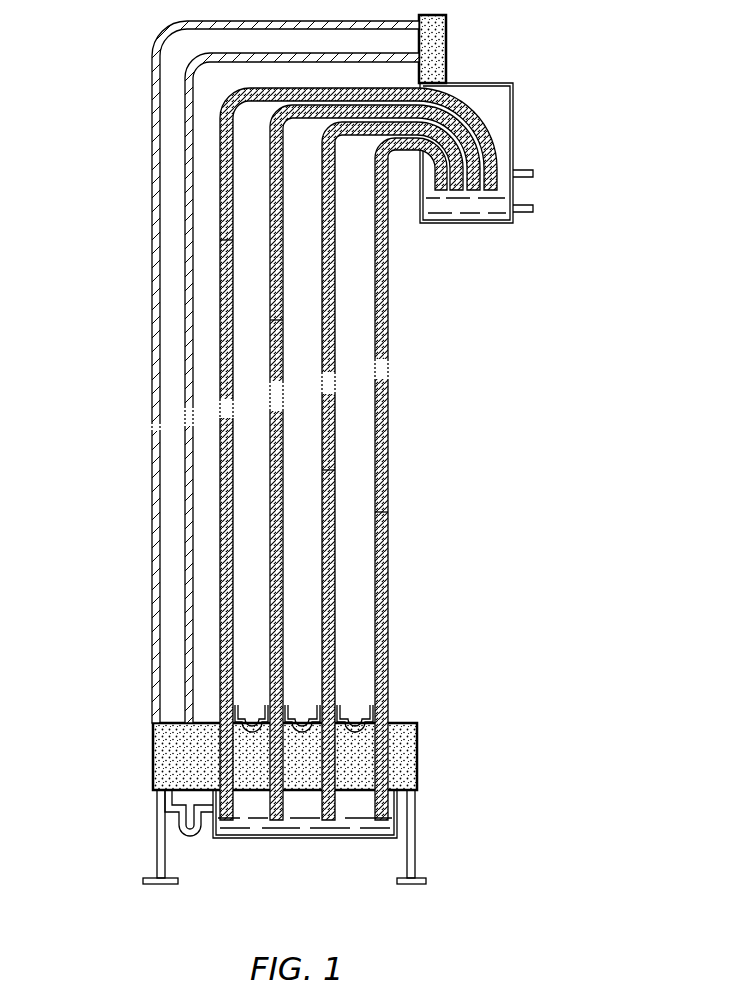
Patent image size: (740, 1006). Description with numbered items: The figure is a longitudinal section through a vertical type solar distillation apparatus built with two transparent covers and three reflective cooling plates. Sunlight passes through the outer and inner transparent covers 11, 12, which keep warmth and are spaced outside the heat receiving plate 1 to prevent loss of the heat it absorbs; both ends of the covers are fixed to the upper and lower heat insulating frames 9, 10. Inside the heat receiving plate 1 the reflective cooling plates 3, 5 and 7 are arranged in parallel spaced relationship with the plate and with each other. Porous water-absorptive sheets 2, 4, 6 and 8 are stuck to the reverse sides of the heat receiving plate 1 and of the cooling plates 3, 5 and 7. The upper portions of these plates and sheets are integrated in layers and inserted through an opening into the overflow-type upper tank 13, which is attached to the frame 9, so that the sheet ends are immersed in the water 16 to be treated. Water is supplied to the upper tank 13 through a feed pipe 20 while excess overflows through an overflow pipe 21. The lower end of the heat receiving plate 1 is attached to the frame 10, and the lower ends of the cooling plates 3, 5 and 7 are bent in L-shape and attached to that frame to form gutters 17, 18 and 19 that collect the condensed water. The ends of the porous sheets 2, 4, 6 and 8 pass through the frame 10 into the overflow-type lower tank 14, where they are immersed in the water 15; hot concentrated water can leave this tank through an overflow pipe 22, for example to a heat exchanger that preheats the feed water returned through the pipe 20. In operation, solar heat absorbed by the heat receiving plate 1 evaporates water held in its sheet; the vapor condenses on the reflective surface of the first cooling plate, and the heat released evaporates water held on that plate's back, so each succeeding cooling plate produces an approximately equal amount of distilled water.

The heat receiving plate 1 is at (218, 192).
The porous water-absorptive sheet 2 is at (222, 235).
The reflective cooling plate 3 is at (270, 316).
The porous water-absorptive sheet 4 is at (272, 287).
The reflective cooling plate 5 is at (318, 472).
The porous water-absorptive sheet 6 is at (335, 322).
The reflective cooling plate 7 is at (368, 516).
The porous water-absorptive sheet 8 is at (388, 391).
The heat insulating frame 9 is at (446, 28).
The heat insulating frame 10 is at (173, 740).
The transparent cover 11 is at (188, 30).
The transparent cover 12 is at (446, 52).
The upper tank 13 is at (513, 100).
The lower tank 14 is at (400, 820).
The water to be treated 15 is at (357, 823).
The water to be treated 16 is at (513, 223).
The gutter 17 is at (247, 724).
The gutter 18 is at (300, 724).
The gutter 19 is at (370, 722).
The feed pipe 20 is at (533, 209).
The overflow pipe 21 is at (533, 173).
The overflow pipe 22 is at (170, 818).